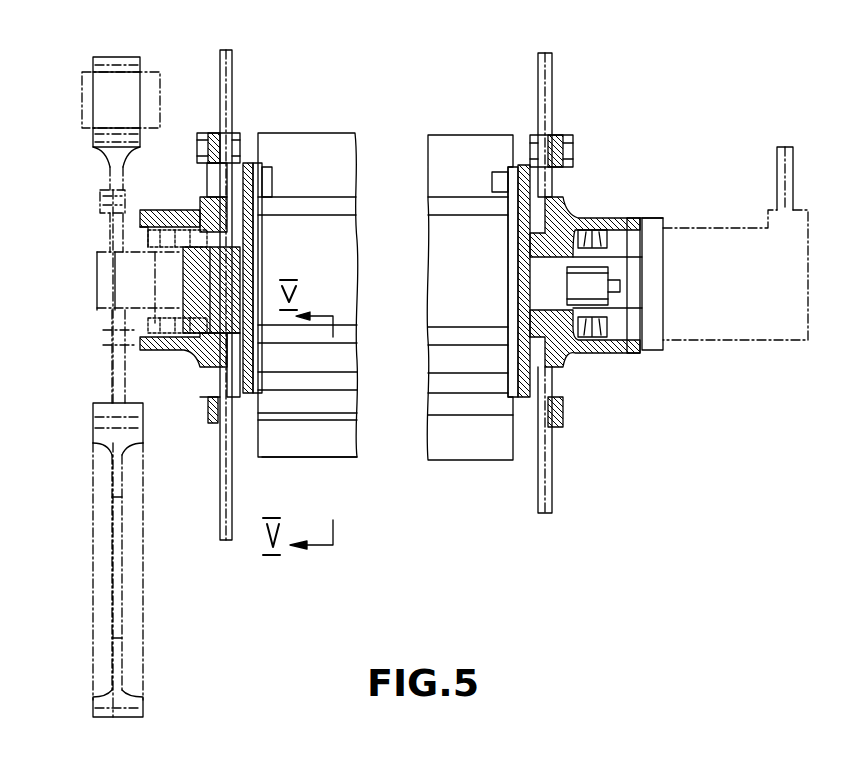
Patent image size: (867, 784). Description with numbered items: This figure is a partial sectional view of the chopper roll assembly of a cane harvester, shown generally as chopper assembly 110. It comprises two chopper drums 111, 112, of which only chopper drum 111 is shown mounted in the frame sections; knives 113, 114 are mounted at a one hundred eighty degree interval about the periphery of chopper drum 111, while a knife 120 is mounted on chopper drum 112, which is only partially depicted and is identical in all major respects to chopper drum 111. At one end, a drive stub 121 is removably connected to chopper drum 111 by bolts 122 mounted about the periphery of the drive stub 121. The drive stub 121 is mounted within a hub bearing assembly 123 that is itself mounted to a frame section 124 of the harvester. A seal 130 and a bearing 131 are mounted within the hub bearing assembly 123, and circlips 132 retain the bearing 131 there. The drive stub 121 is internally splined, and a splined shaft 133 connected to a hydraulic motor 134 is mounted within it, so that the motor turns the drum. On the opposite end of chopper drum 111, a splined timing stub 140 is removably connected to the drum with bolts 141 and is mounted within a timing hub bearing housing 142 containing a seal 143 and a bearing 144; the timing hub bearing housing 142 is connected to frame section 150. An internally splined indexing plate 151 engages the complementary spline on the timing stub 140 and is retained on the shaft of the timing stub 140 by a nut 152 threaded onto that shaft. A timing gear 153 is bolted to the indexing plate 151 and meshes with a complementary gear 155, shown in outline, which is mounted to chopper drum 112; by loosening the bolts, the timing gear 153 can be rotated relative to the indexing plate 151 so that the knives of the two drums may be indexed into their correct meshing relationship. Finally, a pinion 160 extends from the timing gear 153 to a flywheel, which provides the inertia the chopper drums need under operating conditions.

The chopper assembly 110 is at (408, 110).
The chopper drum 111 is at (350, 243).
The chopper drum 112 is at (323, 442).
The knife 113 is at (363, 417).
The knife 114 is at (315, 137).
The knife 120 is at (338, 412).
The drive stub 121 is at (518, 165).
The bolts 122 is at (560, 180).
The hub bearing assembly 123 is at (568, 352).
The frame section 124 is at (555, 450).
The seal 130 is at (578, 220).
The bearing 131 is at (626, 226).
The circlips 132 is at (608, 228).
The splined shaft 133 is at (619, 318).
The hydraulic motor 134 is at (722, 224).
The timing stub 140 is at (250, 163).
The bolts 141 is at (202, 133).
The timing hub bearing housing 142 is at (140, 196).
The seal 143 is at (150, 210).
The bearing 144 is at (135, 368).
The frame section 150 is at (233, 503).
The indexing plate 151 is at (115, 227).
The nut 152 is at (100, 248).
The timing gear 153 is at (104, 376).
The complementary gear 155 is at (142, 453).
The pinion 160 is at (132, 55).